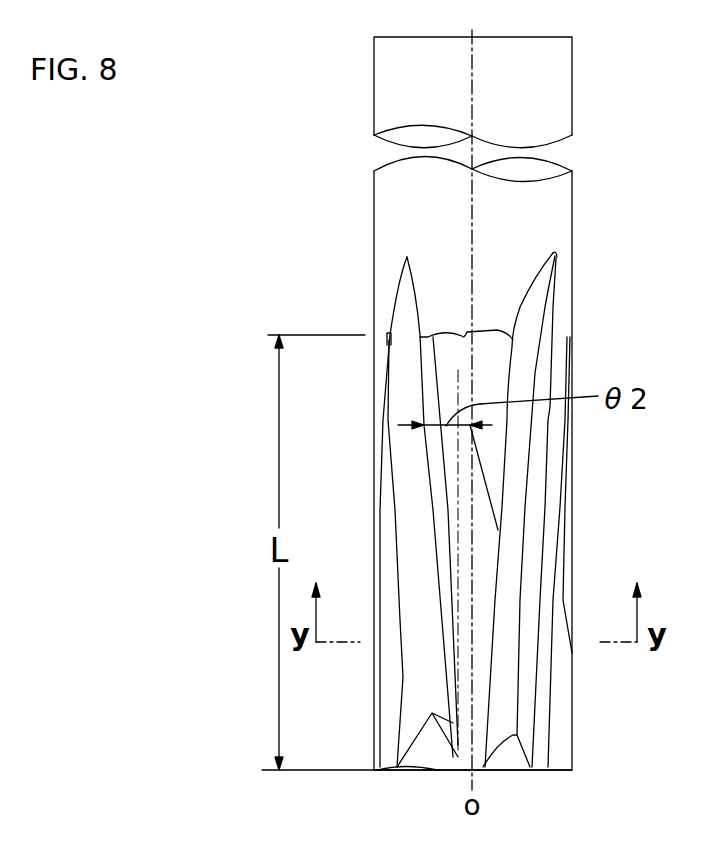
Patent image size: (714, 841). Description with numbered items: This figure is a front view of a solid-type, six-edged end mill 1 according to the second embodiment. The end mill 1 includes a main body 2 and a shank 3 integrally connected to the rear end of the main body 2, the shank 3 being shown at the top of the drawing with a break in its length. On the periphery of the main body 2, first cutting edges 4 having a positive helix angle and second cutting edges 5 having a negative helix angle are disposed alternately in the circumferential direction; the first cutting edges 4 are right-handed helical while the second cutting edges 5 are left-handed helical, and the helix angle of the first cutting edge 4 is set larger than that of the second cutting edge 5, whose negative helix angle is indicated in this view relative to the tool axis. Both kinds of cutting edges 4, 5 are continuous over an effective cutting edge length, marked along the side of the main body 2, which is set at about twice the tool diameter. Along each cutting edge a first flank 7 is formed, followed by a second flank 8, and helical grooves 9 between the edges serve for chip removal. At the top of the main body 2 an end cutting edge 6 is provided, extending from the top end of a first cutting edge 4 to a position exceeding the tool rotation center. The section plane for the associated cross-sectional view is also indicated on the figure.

The end mill 1 is at (580, 212).
The main body 2 is at (494, 318).
The shank 3 is at (538, 100).
The first cutting edge 4 is at (380, 530).
The second cutting edge 5 is at (432, 467).
The end cutting edge 6 is at (525, 770).
The first flank 7 is at (548, 592).
The second flank 8 is at (482, 653).
The helical groove 9 is at (405, 358).